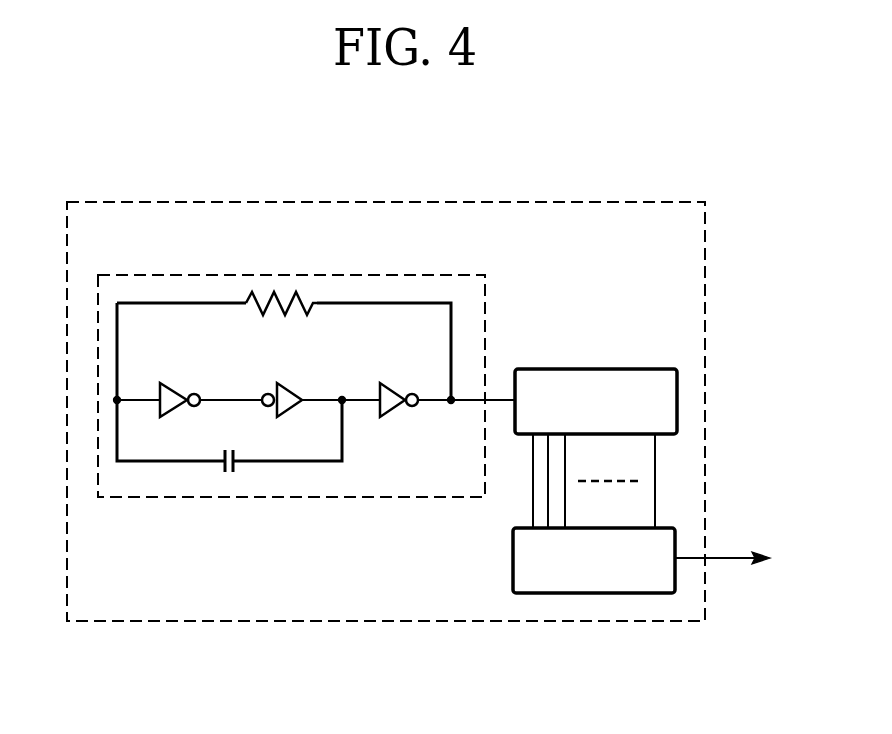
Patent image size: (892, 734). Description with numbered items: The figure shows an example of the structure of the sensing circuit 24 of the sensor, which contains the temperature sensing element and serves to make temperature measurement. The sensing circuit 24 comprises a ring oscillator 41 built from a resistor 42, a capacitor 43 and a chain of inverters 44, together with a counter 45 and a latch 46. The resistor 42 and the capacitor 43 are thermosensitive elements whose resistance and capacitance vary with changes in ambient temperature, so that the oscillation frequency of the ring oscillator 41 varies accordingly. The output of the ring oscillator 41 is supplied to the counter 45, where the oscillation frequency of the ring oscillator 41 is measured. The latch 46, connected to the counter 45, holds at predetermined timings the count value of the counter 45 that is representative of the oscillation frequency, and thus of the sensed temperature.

The sensing circuit 24 is at (654, 200).
The ring oscillator 41 is at (155, 275).
The resistor 42 is at (277, 300).
The capacitor 43 is at (225, 474).
The inverters 44 is at (178, 384).
The counter 45 is at (549, 368).
The latch 46 is at (513, 572).